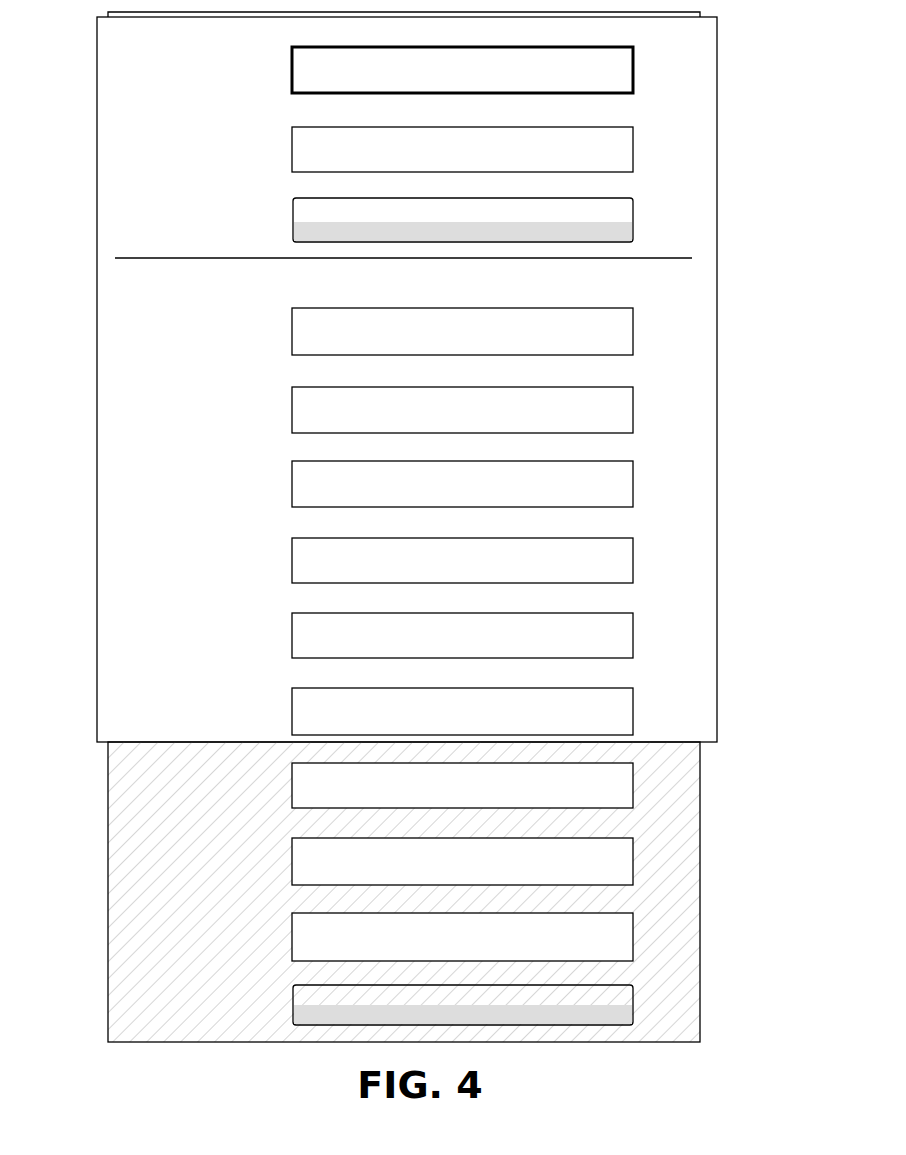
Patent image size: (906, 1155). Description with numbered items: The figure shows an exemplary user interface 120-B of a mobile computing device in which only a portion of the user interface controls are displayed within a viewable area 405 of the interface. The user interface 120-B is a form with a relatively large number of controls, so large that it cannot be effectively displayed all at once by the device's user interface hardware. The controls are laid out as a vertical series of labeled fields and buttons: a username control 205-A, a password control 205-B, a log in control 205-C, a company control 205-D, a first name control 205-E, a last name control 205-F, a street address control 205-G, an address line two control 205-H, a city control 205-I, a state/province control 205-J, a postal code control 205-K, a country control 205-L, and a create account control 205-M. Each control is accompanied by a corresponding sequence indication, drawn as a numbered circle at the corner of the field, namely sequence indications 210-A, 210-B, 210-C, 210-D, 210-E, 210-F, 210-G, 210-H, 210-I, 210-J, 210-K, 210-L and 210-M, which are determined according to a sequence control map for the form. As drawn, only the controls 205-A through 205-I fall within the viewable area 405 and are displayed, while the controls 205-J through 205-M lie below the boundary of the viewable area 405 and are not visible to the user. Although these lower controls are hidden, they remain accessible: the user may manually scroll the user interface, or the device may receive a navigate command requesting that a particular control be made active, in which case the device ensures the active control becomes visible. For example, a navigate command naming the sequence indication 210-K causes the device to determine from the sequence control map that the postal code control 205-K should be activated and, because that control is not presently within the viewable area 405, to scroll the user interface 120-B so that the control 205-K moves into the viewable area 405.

The viewable area 405 is at (717, 290).
The user interface 120-B is at (575, 1043).
The user interface control 205-A is at (292, 92).
The user interface control 205-B is at (292, 171).
The user interface control 205-C is at (293, 241).
The user interface control 205-D is at (292, 354).
The user interface control 205-E is at (292, 432).
The user interface control 205-F is at (292, 506).
The user interface control 205-G is at (292, 582).
The user interface control 205-H is at (292, 657).
The user interface control 205-I is at (292, 734).
The user interface control 205-J is at (292, 807).
The user interface control 205-K is at (292, 884).
The user interface control 205-L is at (292, 960).
The user interface control 205-M is at (293, 1024).
The sequence indication 210-A is at (742, 108).
The sequence indication 210-B is at (742, 187).
The sequence indication 210-C is at (742, 258).
The sequence indication 210-D is at (742, 368).
The sequence indication 210-E is at (742, 447).
The sequence indication 210-F is at (742, 521).
The sequence indication 210-G is at (742, 598).
The sequence indication 210-H is at (742, 673).
The sequence indication 210-I is at (742, 748).
The sequence indication 210-J is at (742, 823).
The sequence indication 210-K is at (742, 898).
The sequence indication 210-L is at (742, 973).
The sequence indication 210-M is at (742, 1049).